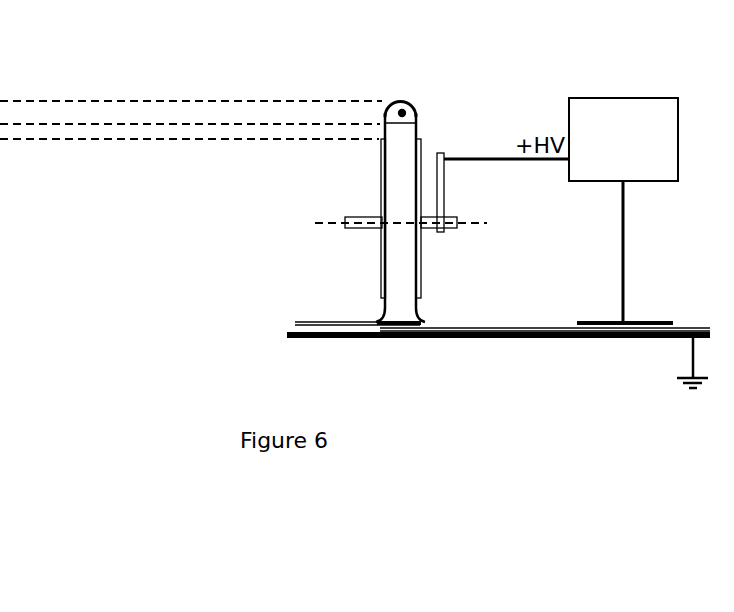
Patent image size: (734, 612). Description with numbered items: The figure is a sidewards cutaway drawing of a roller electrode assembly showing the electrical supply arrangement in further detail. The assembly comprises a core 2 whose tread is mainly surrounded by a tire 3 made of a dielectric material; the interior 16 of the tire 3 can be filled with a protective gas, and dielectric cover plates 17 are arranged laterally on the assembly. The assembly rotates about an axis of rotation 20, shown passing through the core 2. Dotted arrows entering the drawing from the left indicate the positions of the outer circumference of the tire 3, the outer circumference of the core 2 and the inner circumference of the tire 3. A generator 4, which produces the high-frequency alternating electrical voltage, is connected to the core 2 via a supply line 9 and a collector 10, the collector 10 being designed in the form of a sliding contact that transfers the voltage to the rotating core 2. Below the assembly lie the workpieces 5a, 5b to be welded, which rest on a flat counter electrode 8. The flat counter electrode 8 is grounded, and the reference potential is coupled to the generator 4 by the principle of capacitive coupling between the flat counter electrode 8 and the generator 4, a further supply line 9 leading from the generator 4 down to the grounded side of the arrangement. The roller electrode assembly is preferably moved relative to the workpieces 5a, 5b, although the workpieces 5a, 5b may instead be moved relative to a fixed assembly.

The core 2 is at (400, 272).
The tire 3 is at (418, 108).
The generator 4 is at (623, 154).
The workpiece 5a is at (333, 322).
The workpiece 5b is at (502, 328).
The flat counter electrode 8 is at (488, 338).
The supply line 9 is at (492, 157).
The collector 10 is at (444, 197).
The interior of tire 16 is at (400, 110).
The dielectric cover plates 17 is at (382, 210).
The axis of rotation 20 is at (487, 222).